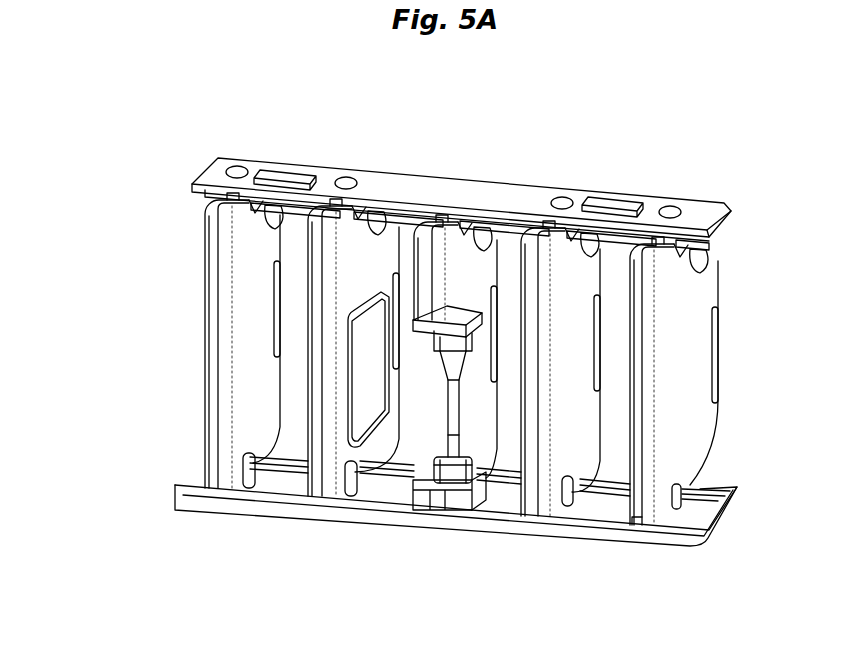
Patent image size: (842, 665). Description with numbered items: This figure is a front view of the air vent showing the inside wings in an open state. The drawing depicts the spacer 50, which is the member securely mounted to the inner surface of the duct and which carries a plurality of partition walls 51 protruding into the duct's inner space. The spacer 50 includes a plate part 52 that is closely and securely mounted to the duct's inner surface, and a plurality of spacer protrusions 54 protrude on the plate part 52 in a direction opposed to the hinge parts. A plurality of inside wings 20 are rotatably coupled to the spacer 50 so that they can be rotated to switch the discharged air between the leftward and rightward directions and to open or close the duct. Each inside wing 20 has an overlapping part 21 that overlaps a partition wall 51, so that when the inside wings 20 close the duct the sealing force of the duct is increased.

The inside wing 20 is at (315, 372).
The overlapping part 21 is at (216, 205).
The spacer 50 is at (520, 174).
The partition wall 51 is at (276, 203).
The plate part 52 is at (400, 184).
The spacer protrusion 54 is at (293, 172).